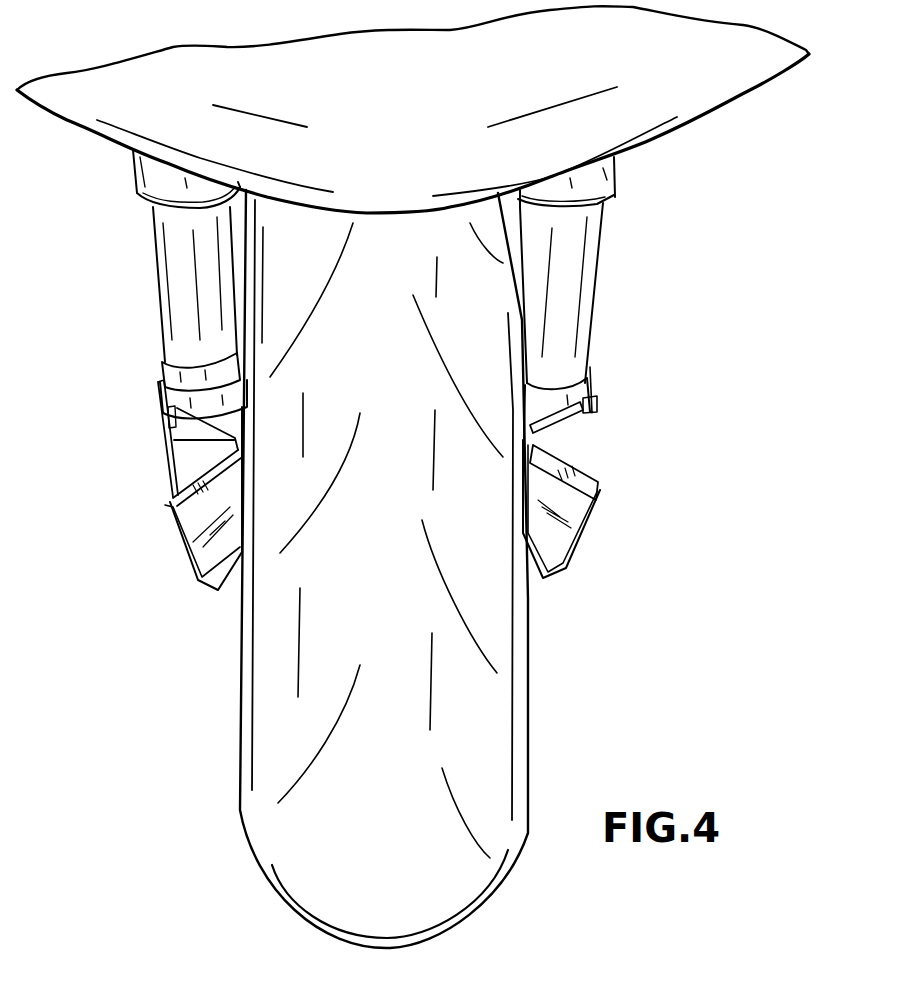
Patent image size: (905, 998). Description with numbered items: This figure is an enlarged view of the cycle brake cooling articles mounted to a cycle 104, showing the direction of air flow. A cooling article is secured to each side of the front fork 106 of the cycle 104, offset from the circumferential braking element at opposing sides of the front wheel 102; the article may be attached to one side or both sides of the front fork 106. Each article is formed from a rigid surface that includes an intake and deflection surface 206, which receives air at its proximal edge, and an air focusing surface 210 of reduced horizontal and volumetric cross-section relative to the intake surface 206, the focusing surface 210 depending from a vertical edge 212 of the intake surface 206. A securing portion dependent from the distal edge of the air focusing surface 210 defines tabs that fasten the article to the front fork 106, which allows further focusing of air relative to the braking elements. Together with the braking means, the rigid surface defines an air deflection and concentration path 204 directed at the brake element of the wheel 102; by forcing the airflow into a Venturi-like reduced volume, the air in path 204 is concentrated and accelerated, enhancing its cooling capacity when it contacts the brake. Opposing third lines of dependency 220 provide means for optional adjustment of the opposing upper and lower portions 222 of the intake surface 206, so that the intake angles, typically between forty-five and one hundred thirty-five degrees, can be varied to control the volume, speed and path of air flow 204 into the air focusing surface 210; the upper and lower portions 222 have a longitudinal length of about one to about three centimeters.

The wheel 102 is at (470, 767).
The cycle 104 is at (826, 368).
The front fork 106 is at (593, 268).
The air deflection and concentration path 204 is at (372, 487).
The intake and deflection surface 206 is at (570, 520).
The air focusing surface 210 is at (590, 408).
The vertical edge 212 is at (182, 452).
The third lines of dependency 220 is at (193, 473).
The upper and lower portions 222 is at (590, 483).